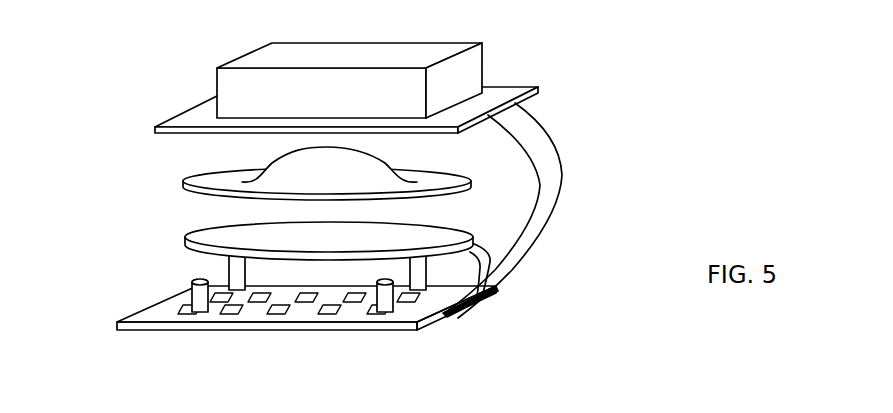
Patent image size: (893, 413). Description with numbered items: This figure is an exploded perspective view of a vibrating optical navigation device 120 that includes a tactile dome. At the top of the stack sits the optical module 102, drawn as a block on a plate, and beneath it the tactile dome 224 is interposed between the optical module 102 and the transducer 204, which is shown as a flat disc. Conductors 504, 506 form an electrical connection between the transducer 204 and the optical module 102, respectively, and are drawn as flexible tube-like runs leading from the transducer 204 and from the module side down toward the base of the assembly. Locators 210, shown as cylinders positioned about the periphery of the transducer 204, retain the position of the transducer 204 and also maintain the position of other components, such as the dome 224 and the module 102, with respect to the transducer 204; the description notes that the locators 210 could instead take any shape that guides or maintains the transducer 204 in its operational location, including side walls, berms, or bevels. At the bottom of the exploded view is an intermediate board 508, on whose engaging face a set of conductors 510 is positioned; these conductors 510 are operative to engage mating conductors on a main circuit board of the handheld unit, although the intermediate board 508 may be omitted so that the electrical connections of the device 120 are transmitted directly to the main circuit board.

The optical module 102 is at (184, 81).
The optical navigation device 120 is at (573, 251).
The transducer 204 is at (212, 240).
The locators 210 is at (187, 289).
The tactile dome 224 is at (217, 182).
The conductor 504 is at (484, 240).
The conductor 506 is at (512, 262).
The intermediate board 508 is at (158, 313).
The conductors 510 is at (341, 308).